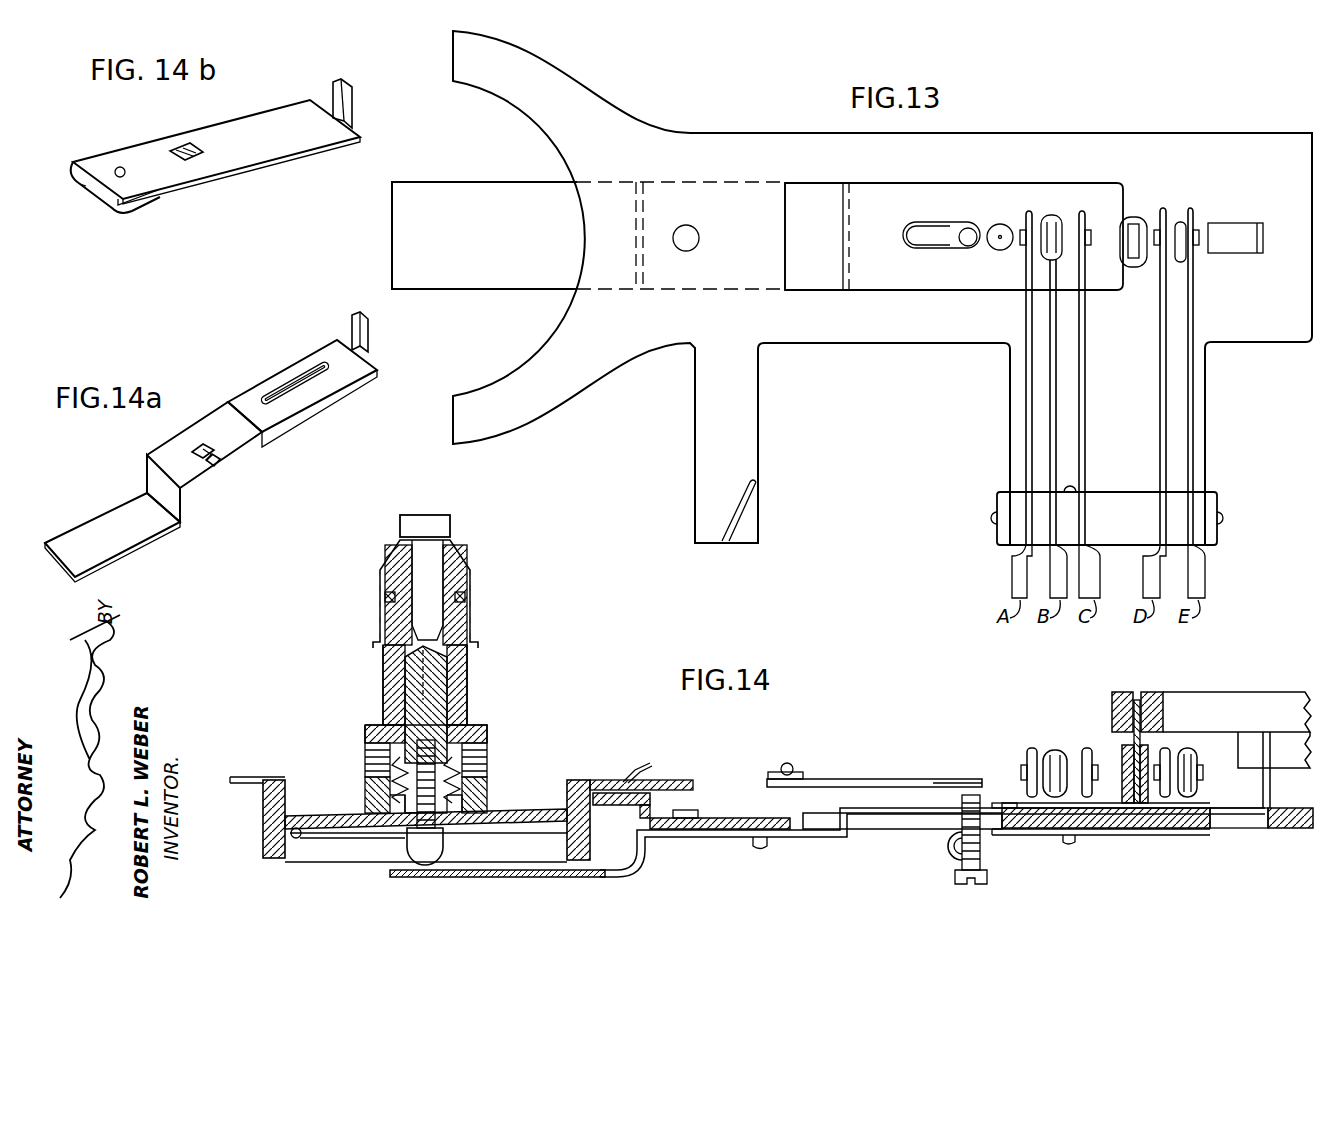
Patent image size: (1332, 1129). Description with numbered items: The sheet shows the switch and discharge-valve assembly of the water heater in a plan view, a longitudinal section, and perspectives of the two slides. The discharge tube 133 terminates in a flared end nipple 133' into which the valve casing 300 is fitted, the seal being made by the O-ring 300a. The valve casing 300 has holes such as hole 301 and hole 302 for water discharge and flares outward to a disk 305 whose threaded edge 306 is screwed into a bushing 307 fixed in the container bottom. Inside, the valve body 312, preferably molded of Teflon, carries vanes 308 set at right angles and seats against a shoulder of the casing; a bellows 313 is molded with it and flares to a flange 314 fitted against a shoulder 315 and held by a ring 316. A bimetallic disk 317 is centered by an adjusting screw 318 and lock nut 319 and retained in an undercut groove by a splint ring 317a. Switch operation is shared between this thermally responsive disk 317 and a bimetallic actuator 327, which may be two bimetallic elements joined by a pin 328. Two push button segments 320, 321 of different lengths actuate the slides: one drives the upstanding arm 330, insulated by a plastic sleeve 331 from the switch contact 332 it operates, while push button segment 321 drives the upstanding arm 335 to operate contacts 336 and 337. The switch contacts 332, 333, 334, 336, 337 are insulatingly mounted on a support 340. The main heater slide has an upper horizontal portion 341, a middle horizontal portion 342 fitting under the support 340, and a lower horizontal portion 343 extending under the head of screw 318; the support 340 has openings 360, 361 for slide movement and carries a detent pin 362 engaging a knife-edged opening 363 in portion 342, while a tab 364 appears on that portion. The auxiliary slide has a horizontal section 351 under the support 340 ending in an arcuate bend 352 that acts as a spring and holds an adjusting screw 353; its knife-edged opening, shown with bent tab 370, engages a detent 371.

In FIG. 14, the discharge tube 133 is at (464, 521).
In FIG. 14, the flared end nipple 133' is at (460, 594).
In FIG. 14, the valve casing 300 is at (383, 696).
In FIG. 14, the O-ring 300a is at (465, 595).
In FIG. 14, the hole 301 is at (365, 735).
In FIG. 14, the hole 302 is at (440, 760).
In FIG. 14, the disk 305 is at (520, 812).
In FIG. 14, the threaded edge 306 is at (535, 877).
In FIG. 14, the bushing 307 is at (263, 800).
In FIG. 14, the vanes 308 is at (405, 672).
In FIG. 14, the valve body 312 is at (365, 757).
In FIG. 14, the bellows 313 is at (470, 775).
In FIG. 14, the flange 314 is at (365, 786).
In FIG. 14, the shoulder 315 is at (365, 803).
In FIG. 14, the ring 316 is at (405, 840).
In FIG. 14, the bimetallic disk 317 is at (522, 838).
In FIG. 14, the splint ring 317a is at (296, 840).
In FIG. 14, the adjusting screw 318 is at (412, 858).
In FIG. 14, the lock nut 319 is at (470, 802).
In FIG. 14, the push button segment 320 is at (1260, 702).
In FIG. 14, the push button segment 321 is at (1285, 745).
In FIG. 14, the bimetallic actuator 327 is at (920, 779).
In FIG. 14, the pin 328 is at (787, 763).
In FIG. 14a, the upstanding arm 330 is at (353, 330).
In FIG. 13, the upstanding arm 330 is at (1145, 224).
In FIG. 14, the upstanding arm 330 is at (1130, 745).
In FIG. 13, the plastic sleeve 331 is at (1133, 222).
In FIG. 14, the plastic sleeve 331 is at (1137, 745).
In FIG. 13, the switch contact 332 is at (1082, 213).
In FIG. 14, the switch contact 332 is at (1086, 748).
In FIG. 13, the switch contact 333 is at (1050, 216).
In FIG. 14, the switch contact 333 is at (1050, 750).
In FIG. 13, the switch contact 334 is at (1028, 213).
In FIG. 14, the switch contact 334 is at (1032, 748).
In FIG. 14b, the upstanding arm 335 is at (335, 82).
In FIG. 13, the upstanding arm 335 is at (1250, 226).
In FIG. 14, the upstanding arm 335 is at (1270, 790).
In FIG. 13, the switch contact 336 is at (1190, 212).
In FIG. 14, the switch contact 336 is at (1197, 791).
In FIG. 13, the switch contact 337 is at (1163, 210).
In FIG. 14, the switch contact 337 is at (1165, 748).
In FIG. 13, the support 340 is at (1268, 336).
In FIG. 14, the support 340 is at (1285, 830).
In FIG. 14a, the upper horizontal portion 341 is at (292, 363).
In FIG. 13, the upper horizontal portion 341 is at (1097, 285).
In FIG. 14, the upper horizontal portion 341 is at (1105, 810).
In FIG. 14a, the middle horizontal portion 342 is at (160, 455).
In FIG. 13, the middle horizontal portion 342 is at (822, 205).
In FIG. 14, the middle horizontal portion 342 is at (660, 832).
In FIG. 14a, the lower horizontal portion 343 is at (102, 520).
In FIG. 13, the lower horizontal portion 343 is at (492, 282).
In FIG. 14, the lower horizontal portion 343 is at (628, 874).
In FIG. 14b, the horizontal section 351 is at (246, 159).
In FIG. 14, the horizontal section 351 is at (1093, 836).
In FIG. 14b, the arcuate bend 352 is at (82, 195).
In FIG. 14, the arcuate bend 352 is at (940, 845).
In FIG. 13, the adjusting screw 353 is at (968, 228).
In FIG. 14, the adjusting screw 353 is at (987, 880).
In FIG. 13, the opening 360 is at (823, 291).
In FIG. 14, the opening 360 is at (815, 813).
In FIG. 13, the opening 361 is at (980, 250).
In FIG. 14, the opening 361 is at (933, 778).
In FIG. 14, the detent pin 362 is at (690, 808).
In FIG. 14a, the knife-edged opening 363 is at (200, 447).
In FIG. 14, the knife-edged opening 363 is at (760, 848).
In FIG. 14a, the tab 364 is at (220, 464).
In FIG. 14b, the bent tab 370 is at (182, 148).
In FIG. 14, the bent tab 370 is at (1063, 835).
In FIG. 14, the detent 371 is at (1005, 803).